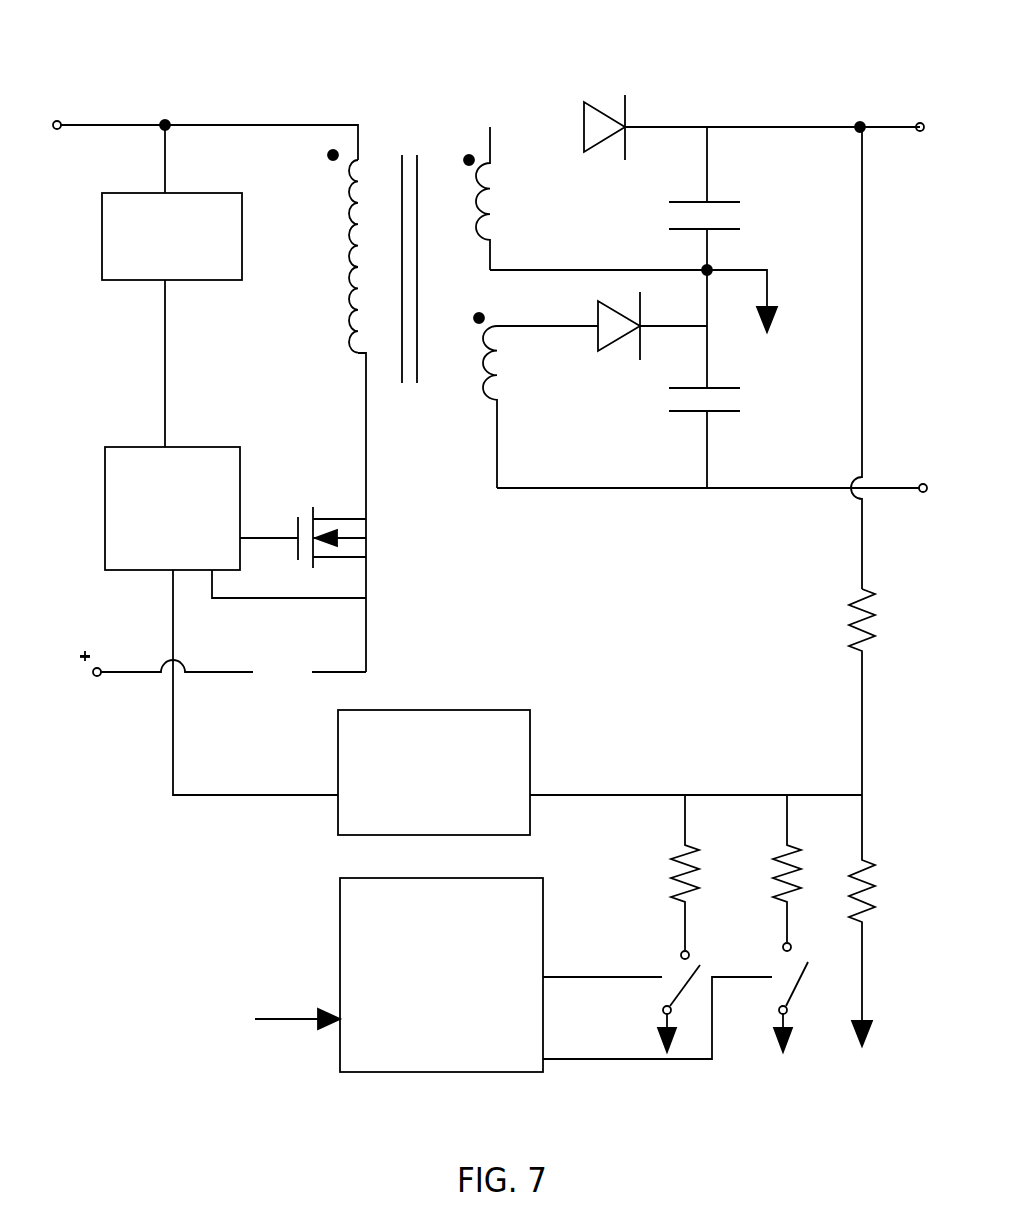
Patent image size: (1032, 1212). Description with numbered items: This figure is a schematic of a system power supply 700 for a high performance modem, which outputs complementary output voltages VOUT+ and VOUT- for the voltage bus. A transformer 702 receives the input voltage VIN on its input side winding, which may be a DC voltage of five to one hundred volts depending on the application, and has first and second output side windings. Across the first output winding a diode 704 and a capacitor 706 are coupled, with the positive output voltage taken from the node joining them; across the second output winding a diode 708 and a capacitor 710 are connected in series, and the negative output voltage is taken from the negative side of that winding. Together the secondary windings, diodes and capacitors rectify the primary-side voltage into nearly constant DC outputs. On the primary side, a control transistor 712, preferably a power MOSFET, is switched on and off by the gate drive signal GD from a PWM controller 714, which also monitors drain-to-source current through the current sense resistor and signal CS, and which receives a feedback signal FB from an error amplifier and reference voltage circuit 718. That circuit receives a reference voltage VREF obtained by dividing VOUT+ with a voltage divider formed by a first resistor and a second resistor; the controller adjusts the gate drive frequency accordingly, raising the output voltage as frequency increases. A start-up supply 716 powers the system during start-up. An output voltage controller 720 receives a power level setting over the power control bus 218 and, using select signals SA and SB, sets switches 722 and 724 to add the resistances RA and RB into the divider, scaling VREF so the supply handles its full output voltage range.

The system power supply 700 is at (734, 44).
The transformer 702 is at (405, 148).
The diode 704 is at (600, 104).
The capacitor 706 is at (735, 216).
The diode 708 is at (618, 350).
The capacitor 710 is at (735, 401).
The control transistor 712 is at (373, 533).
The PWM controller 714 is at (212, 445).
The start-up supply 716 is at (242, 233).
The error amplifier and reference voltage circuit 718 is at (488, 708).
The output voltage controller 720 is at (340, 912).
The switch 722 is at (678, 997).
The switch 724 is at (793, 996).
The power control bus 218 is at (279, 1022).